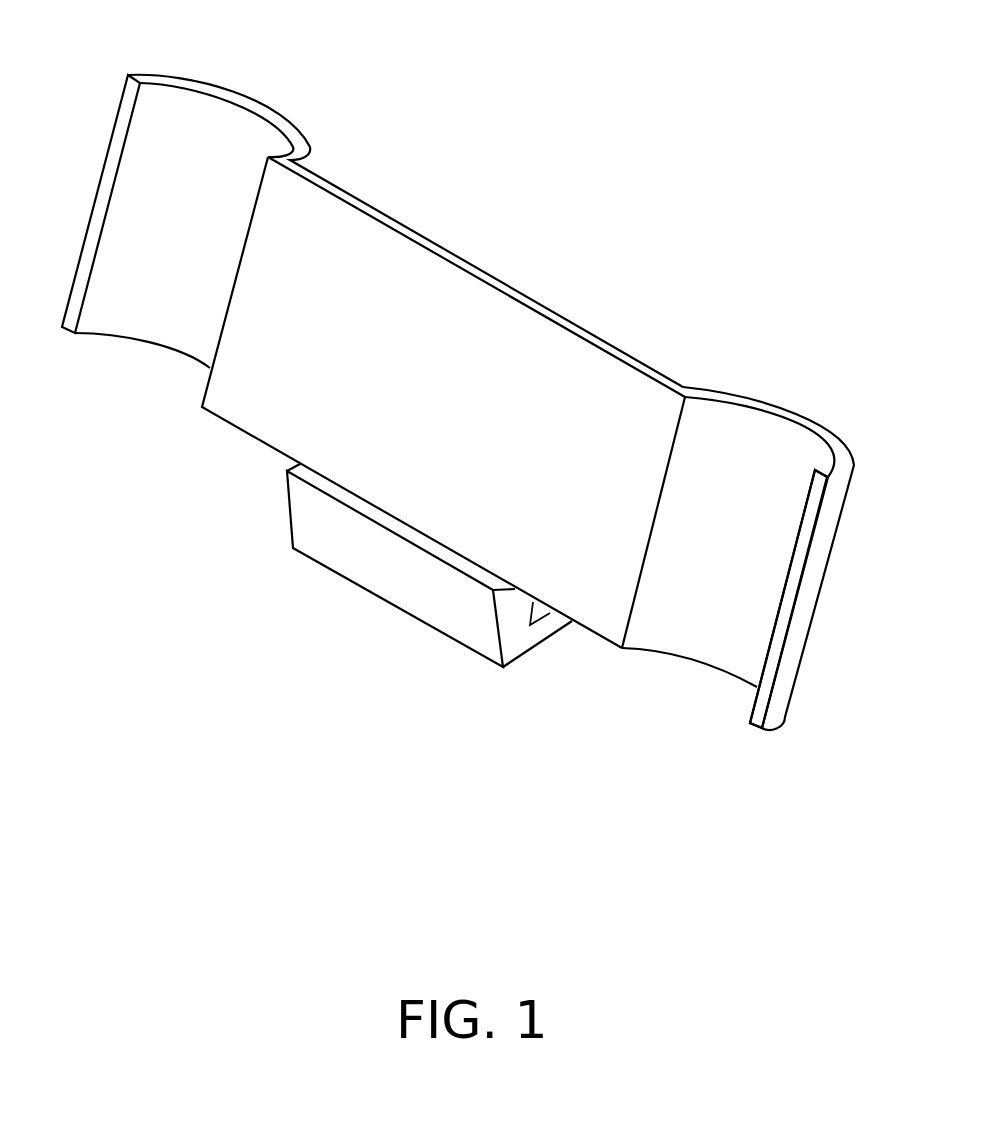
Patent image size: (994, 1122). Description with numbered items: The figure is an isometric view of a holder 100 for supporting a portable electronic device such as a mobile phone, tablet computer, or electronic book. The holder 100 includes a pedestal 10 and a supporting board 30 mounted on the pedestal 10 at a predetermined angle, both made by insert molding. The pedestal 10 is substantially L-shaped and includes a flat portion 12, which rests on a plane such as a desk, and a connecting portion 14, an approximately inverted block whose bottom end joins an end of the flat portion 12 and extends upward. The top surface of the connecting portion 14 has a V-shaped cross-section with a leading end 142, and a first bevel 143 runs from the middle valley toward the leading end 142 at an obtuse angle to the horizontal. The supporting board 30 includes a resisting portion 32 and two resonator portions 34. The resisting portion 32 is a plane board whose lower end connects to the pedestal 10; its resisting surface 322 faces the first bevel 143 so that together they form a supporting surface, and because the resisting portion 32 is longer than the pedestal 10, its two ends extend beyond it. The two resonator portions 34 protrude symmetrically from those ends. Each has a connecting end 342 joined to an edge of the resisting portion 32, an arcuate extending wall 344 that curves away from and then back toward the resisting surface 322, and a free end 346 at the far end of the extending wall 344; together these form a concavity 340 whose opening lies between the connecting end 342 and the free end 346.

The holder 100 is at (475, 70).
The pedestal 10 is at (377, 637).
The flat portion 12 is at (533, 633).
The connecting portion 14 is at (510, 602).
The leading end 142 is at (335, 500).
The first bevel 143 is at (382, 517).
The supporting board 30 is at (478, 452).
The resisting portion 32 is at (633, 360).
The resisting surface 322 is at (375, 263).
The resonator portion 34 is at (748, 393).
The concavity 340 is at (775, 457).
The connecting end 342 is at (622, 648).
The extending wall 344 is at (723, 633).
The free end 346 is at (753, 717).